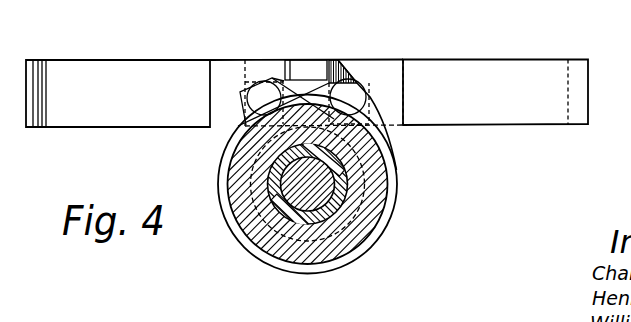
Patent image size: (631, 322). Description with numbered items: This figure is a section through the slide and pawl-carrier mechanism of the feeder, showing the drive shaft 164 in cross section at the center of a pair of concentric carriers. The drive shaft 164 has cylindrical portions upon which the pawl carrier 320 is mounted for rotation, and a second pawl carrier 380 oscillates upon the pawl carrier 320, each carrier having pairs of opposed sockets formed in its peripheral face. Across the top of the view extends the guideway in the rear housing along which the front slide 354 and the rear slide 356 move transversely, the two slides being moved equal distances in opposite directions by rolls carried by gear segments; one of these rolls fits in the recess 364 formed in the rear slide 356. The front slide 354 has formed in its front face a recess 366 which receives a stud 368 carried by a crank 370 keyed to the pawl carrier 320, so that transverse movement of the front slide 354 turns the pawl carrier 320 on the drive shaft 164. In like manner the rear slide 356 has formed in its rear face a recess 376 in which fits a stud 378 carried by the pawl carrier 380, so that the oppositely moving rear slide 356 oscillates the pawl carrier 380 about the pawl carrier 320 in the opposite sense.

The front slide 354 is at (107, 64).
The rear slide 356 is at (459, 59).
The recess 366 is at (249, 77).
The stud 368 is at (272, 80).
The crank 370 is at (298, 79).
The recess 364 is at (321, 65).
The recess 376 is at (365, 67).
The stud 378 is at (367, 100).
The pawl carrier 380 is at (397, 162).
The pawl carrier 320 is at (345, 204).
The drive shaft 164 is at (299, 229).